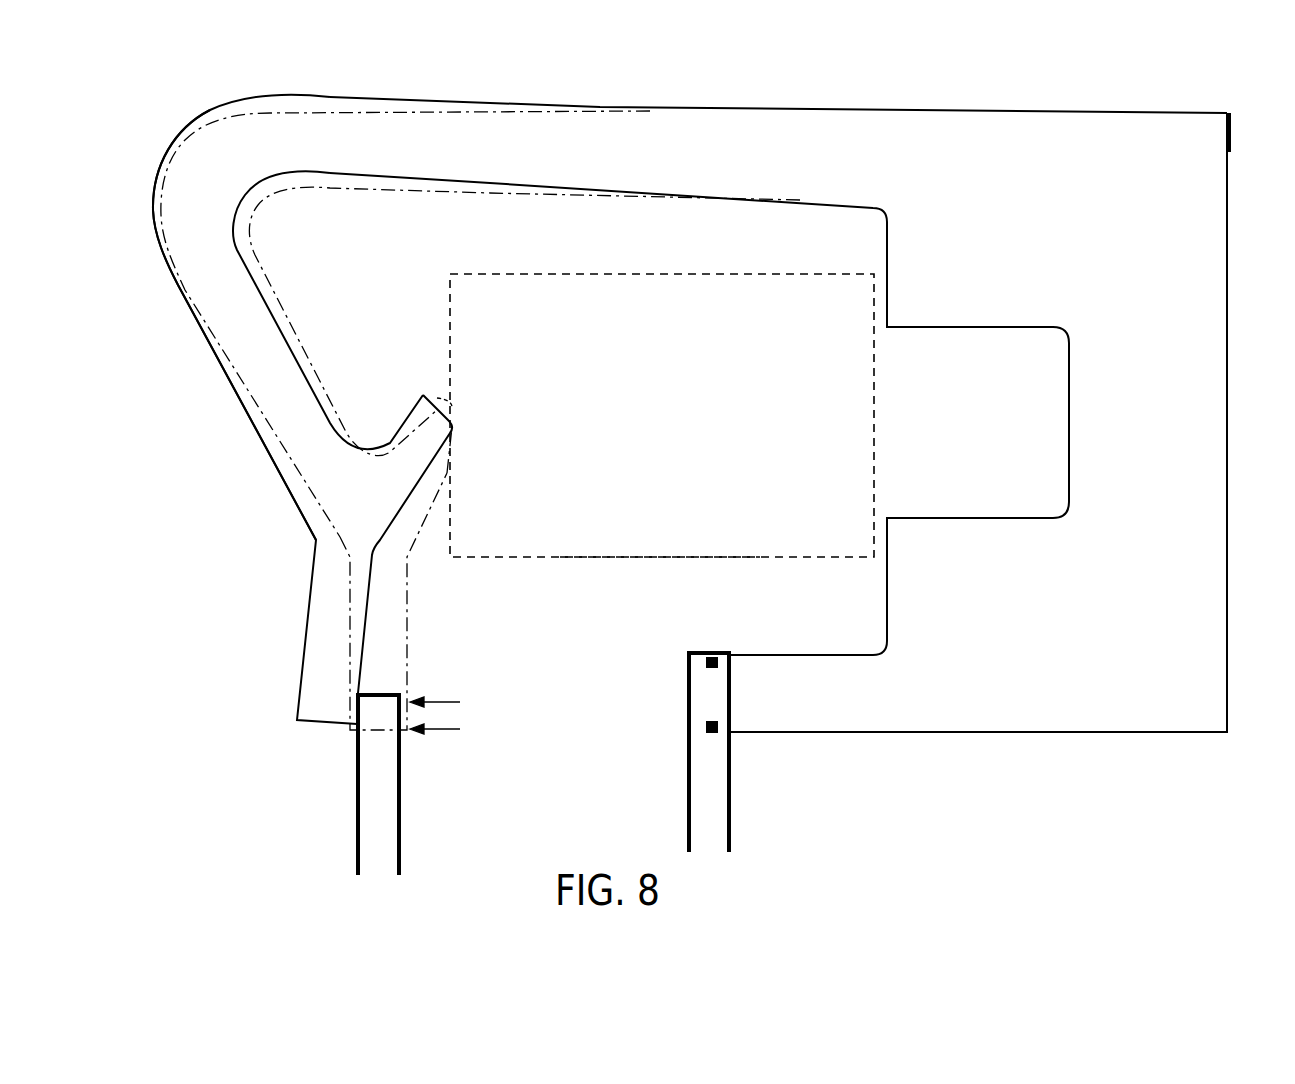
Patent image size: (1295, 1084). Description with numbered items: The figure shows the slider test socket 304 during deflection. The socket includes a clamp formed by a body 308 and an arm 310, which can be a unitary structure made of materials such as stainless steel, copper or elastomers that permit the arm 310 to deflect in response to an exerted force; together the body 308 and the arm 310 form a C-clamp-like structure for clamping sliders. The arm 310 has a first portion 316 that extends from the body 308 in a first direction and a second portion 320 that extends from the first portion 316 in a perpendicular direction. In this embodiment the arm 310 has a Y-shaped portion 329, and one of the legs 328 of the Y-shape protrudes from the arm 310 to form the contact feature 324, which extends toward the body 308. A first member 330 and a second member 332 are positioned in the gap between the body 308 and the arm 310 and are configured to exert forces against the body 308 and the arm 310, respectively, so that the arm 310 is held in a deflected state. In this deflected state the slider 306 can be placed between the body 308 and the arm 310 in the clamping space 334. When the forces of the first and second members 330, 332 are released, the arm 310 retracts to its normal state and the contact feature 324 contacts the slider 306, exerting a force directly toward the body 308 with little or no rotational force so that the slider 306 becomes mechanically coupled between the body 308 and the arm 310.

The slider test socket 304 is at (338, 93).
The slider 306 is at (566, 558).
The body 308 is at (1222, 132).
The arm 310 is at (854, 128).
The first portion 316 is at (473, 125).
The second portion 320 is at (222, 310).
The contact feature 324 is at (440, 422).
The leg 328 is at (392, 442).
The Y-shaped portion 329 is at (128, 179).
The first member 330 is at (733, 820).
The second member 332 is at (356, 836).
The clamping space 334 is at (450, 302).